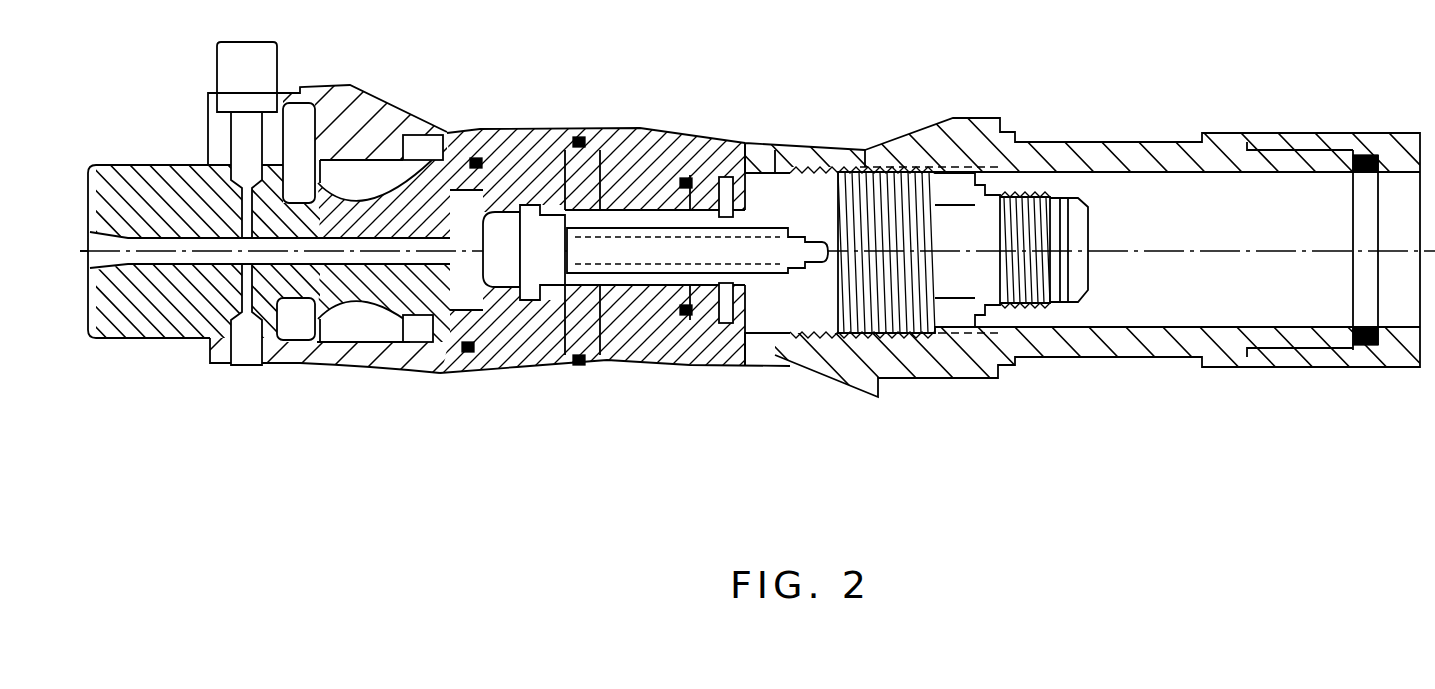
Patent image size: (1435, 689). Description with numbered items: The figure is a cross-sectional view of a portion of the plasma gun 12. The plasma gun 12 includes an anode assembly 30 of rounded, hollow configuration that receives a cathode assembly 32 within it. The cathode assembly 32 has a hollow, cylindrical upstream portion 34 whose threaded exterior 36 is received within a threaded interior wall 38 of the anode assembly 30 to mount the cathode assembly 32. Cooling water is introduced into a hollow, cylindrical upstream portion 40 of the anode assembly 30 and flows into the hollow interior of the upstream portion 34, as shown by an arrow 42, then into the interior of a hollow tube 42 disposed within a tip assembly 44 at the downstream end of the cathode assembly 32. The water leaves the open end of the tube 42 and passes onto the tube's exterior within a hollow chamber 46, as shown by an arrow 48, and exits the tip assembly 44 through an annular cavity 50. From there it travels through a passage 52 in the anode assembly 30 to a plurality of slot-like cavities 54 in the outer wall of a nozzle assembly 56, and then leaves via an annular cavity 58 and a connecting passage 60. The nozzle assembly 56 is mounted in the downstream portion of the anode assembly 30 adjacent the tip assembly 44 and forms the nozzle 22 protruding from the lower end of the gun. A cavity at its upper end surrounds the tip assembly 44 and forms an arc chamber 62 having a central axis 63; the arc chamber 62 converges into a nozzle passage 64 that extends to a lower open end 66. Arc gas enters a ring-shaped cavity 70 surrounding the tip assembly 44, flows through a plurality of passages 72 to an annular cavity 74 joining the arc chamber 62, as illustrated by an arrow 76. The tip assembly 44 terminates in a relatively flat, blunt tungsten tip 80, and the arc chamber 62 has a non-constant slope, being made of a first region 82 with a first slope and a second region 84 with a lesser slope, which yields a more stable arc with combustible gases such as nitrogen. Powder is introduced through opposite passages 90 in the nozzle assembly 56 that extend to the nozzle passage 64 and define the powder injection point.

The plasma gun 12 is at (574, 486).
The nozzle 22 is at (147, 165).
The anode assembly 30 is at (793, 358).
The cathode assembly 32 is at (658, 175).
The upstream portion 34 is at (1060, 290).
The threaded exterior 36 is at (872, 193).
The threaded interior wall 38 is at (800, 177).
The upstream portion 40 is at (1325, 367).
The hollow tube 42 is at (662, 305).
The tip assembly 44 is at (608, 197).
The hollow chamber 46 is at (543, 203).
The arrow 48 is at (555, 317).
The annular cavity 50 is at (725, 195).
The passage 52 is at (470, 357).
The slot-like cavities 54 is at (360, 328).
The nozzle assembly 56 is at (177, 340).
The annular cavity 58 is at (302, 350).
The connecting passage 60 is at (365, 115).
The arc chamber 62 is at (447, 140).
The central axis 63 is at (437, 256).
The nozzle passage 64 is at (186, 238).
The lower open end 66 is at (88, 270).
The ring-shaped cavity 70 is at (607, 347).
The passages 72 is at (577, 350).
The annular cavity 74 is at (522, 305).
The arrow 76 is at (572, 180).
The tungsten tip 80 is at (502, 233).
The first region 82 is at (447, 270).
The second region 84 is at (393, 340).
The passages 90 is at (297, 195).